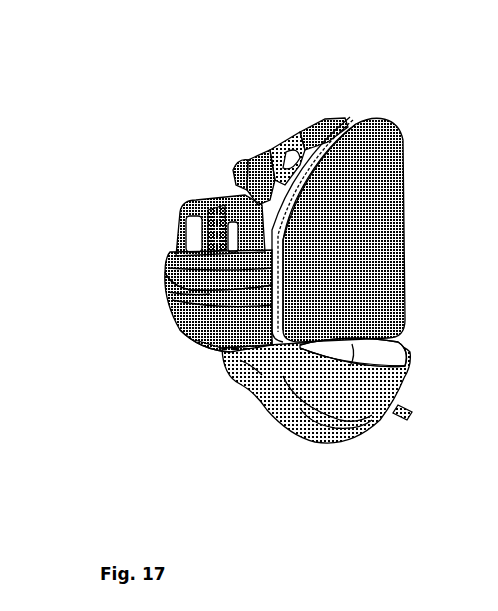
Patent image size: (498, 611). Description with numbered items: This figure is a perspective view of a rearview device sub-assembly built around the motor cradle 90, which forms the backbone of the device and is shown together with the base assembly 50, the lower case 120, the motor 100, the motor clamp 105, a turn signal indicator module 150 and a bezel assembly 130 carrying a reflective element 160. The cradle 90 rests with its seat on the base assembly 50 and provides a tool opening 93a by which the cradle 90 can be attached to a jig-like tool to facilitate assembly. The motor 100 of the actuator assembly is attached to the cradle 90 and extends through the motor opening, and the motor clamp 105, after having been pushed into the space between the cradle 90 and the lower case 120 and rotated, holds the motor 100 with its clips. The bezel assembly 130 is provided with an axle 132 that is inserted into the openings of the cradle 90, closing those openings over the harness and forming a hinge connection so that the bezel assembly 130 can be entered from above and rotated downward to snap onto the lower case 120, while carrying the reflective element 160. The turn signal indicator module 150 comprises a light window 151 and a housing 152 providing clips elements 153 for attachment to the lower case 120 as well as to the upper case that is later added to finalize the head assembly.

The base assembly 50 is at (360, 342).
The cradle 90 is at (322, 130).
The tool opening 93a is at (186, 315).
The motor 100 is at (282, 153).
The motor clamp 105 is at (242, 172).
The lower case 120 is at (201, 343).
The bezel assembly 130 is at (366, 122).
The axle 132 is at (267, 163).
The turn signal indicator module 150 is at (126, 234).
The light window 151 is at (162, 283).
The housing 152 is at (177, 240).
The clips elements 153 is at (193, 210).
The reflective element 160 is at (370, 217).